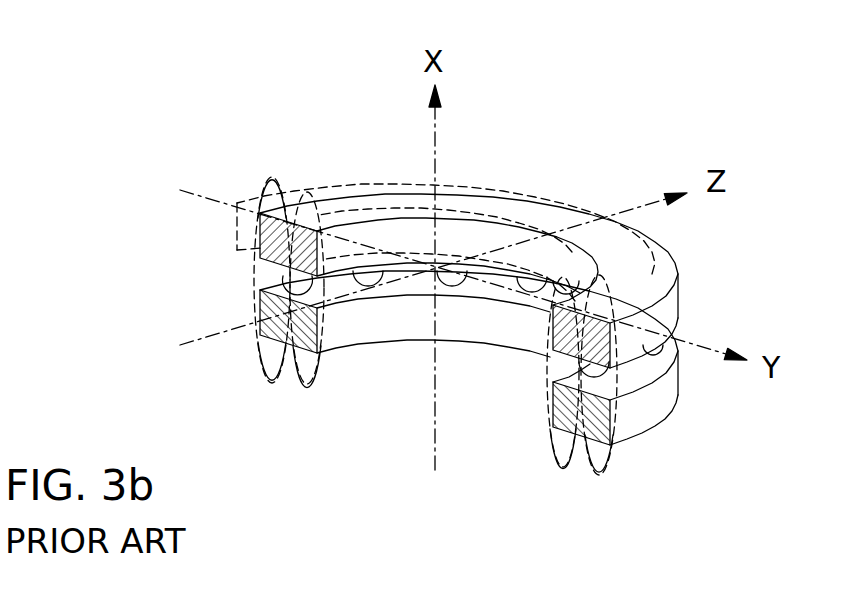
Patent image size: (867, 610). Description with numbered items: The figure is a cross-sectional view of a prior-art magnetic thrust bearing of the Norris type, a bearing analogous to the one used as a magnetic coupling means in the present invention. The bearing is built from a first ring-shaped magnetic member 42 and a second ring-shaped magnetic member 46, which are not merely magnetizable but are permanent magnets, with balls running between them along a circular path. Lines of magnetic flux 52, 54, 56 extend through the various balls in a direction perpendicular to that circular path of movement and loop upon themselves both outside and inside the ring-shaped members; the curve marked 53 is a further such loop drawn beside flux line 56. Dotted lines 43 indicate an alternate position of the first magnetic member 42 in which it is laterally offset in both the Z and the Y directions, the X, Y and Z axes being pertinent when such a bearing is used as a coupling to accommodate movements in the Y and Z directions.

The first ring-shaped magnetic member 42 is at (683, 290).
The dotted lines 43 is at (480, 185).
The second ring-shaped magnetic member 46 is at (677, 402).
The lines of magnetic flux 52 is at (250, 297).
The ball track circle 53 is at (610, 455).
The lines of magnetic flux 54 is at (298, 370).
The lines of magnetic flux 56 is at (548, 438).